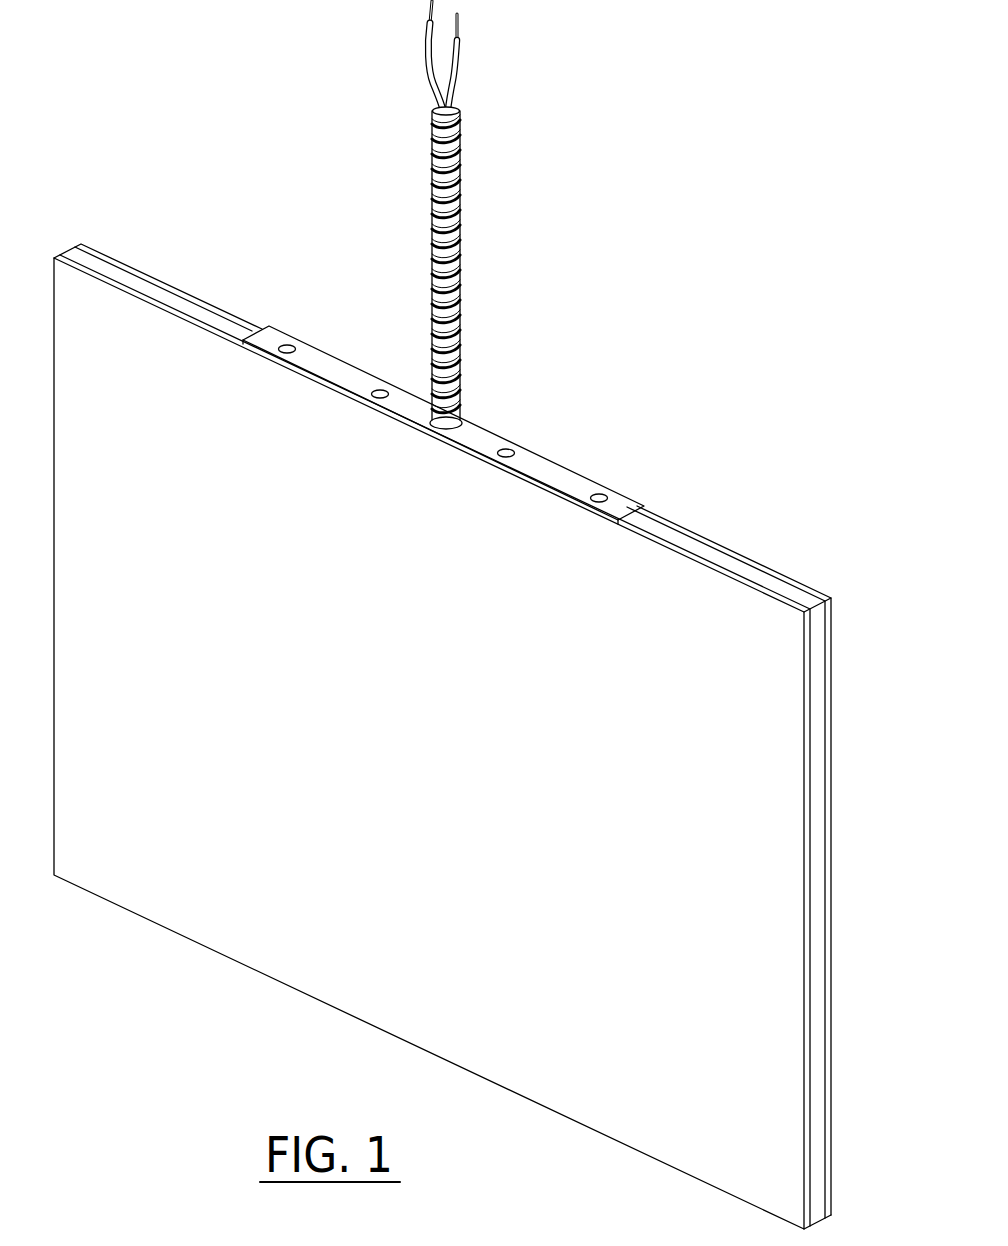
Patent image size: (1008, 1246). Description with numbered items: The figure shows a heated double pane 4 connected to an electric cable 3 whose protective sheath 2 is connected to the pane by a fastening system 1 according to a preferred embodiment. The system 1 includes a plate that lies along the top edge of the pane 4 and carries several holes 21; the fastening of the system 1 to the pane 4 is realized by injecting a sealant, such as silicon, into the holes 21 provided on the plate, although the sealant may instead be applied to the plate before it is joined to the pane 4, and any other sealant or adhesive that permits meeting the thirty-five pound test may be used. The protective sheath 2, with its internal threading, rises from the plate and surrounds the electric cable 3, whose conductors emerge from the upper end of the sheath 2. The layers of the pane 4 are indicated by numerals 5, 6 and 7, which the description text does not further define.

The system 1 is at (454, 410).
The holes 21 is at (508, 447).
The protective sheath 2 is at (430, 287).
The electric cable 3 is at (462, 57).
The pane 4 is at (145, 272).
The back layer 5 is at (697, 532).
The core layer 6 is at (738, 563).
The front layer 7 is at (773, 593).